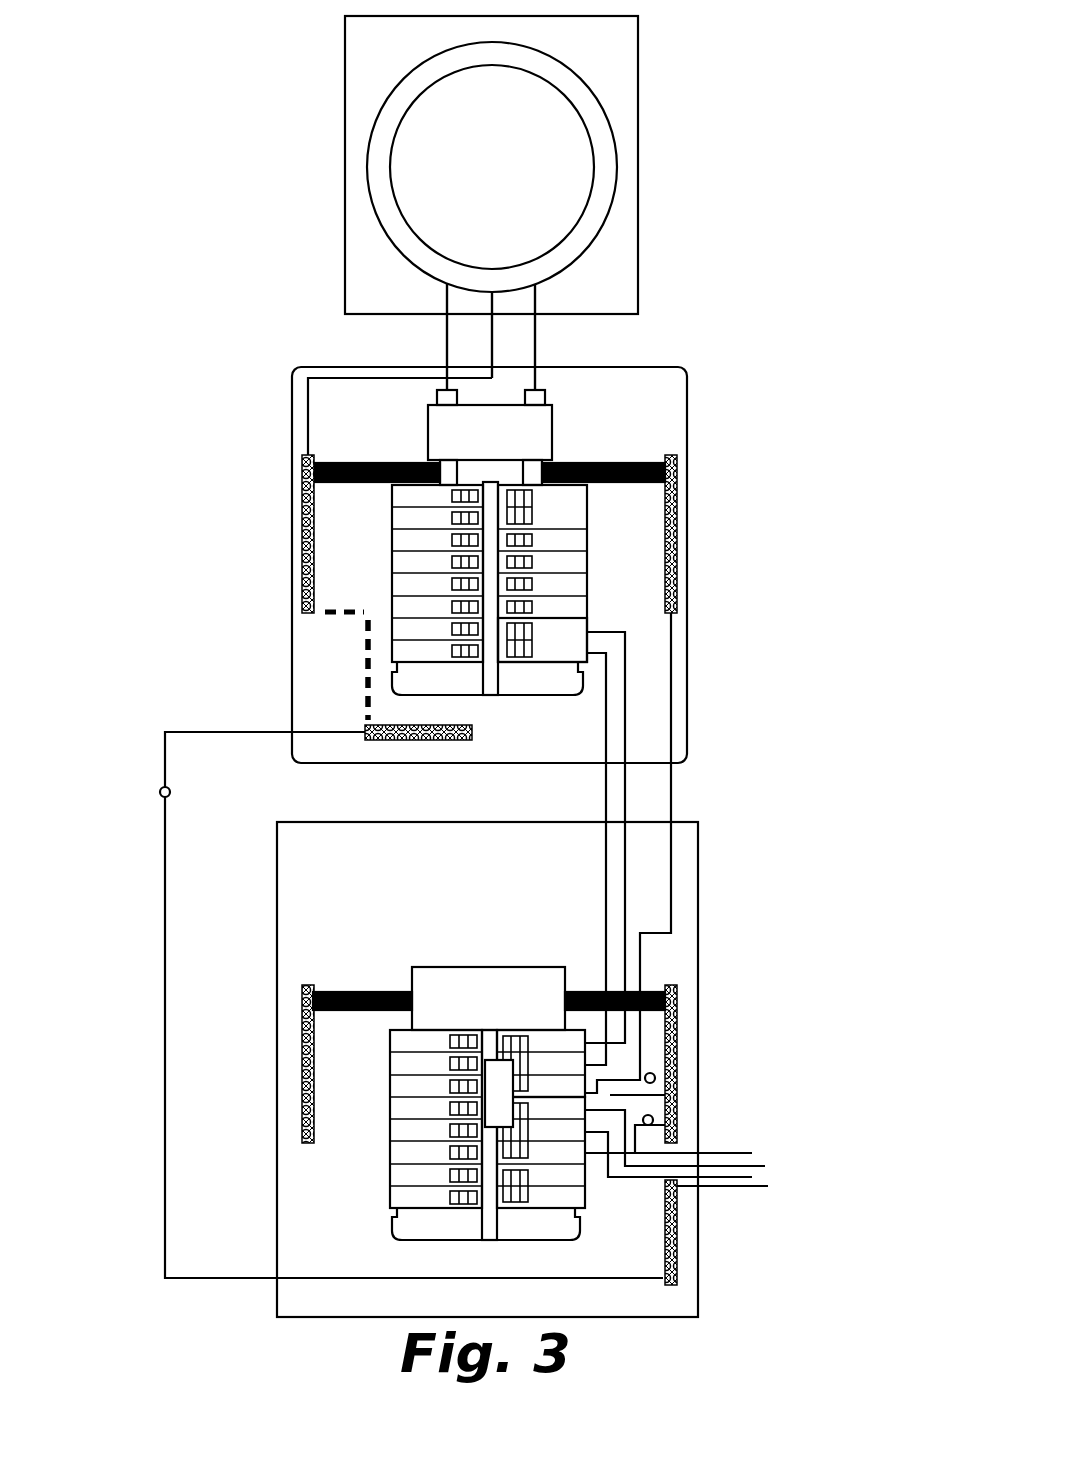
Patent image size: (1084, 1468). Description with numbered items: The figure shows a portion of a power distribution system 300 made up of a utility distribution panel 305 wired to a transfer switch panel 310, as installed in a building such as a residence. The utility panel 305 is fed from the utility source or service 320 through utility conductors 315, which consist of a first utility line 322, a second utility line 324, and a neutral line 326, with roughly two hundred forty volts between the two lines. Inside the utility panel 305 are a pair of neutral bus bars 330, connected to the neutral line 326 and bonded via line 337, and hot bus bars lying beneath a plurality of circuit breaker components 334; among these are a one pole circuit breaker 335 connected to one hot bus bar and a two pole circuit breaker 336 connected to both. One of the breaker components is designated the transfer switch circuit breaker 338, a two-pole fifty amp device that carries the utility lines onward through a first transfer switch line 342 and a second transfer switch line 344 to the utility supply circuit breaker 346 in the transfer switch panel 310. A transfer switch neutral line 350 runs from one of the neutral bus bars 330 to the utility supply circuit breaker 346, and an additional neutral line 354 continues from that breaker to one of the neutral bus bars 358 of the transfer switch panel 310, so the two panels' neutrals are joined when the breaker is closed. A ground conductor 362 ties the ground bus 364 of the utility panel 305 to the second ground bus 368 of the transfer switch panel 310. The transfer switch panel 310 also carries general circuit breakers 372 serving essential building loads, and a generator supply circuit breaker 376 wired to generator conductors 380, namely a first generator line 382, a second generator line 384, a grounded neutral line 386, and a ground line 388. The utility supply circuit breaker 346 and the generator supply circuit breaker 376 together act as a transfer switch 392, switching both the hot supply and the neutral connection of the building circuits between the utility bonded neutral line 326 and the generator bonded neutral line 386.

The power distribution system 300 is at (160, 592).
The utility distribution panel 305 is at (271, 422).
The transfer switch panel 310 is at (256, 832).
The utility conductors 315 is at (582, 347).
The utility source or service 320 is at (466, 217).
The first utility line 322 is at (537, 303).
The second utility line 324 is at (446, 355).
The neutral line 326 is at (490, 333).
The neutral bus bars 330 is at (306, 537).
The circuit breaker components 334 is at (355, 646).
The one pole circuit breaker 335 is at (385, 520).
The two pole circuit breaker 336 is at (601, 506).
The bonding line 337 is at (364, 628).
The transfer switch circuit breaker 338 is at (592, 620).
The first transfer switch line 342 is at (621, 762).
The second transfer switch line 344 is at (603, 810).
The utility supply circuit breaker 346 is at (548, 1056).
The transfer switch neutral line 350 is at (673, 700).
The additional neutral line 354 is at (678, 1097).
The neutral bus bars 358 is at (301, 1032).
The ground conductor 362 is at (163, 870).
The ground bus 364 is at (425, 742).
The second ground bus 368 is at (676, 1268).
The general circuit breakers 372 is at (355, 1181).
The generator supply circuit breaker 376 is at (577, 1137).
The generator conductors 380 is at (777, 1222).
The first generator line 382 is at (765, 1163).
The second generator line 384 is at (708, 1181).
The grounded neutral line 386 is at (733, 1151).
The ground line 388 is at (768, 1187).
The transfer switch 392 is at (491, 1015).